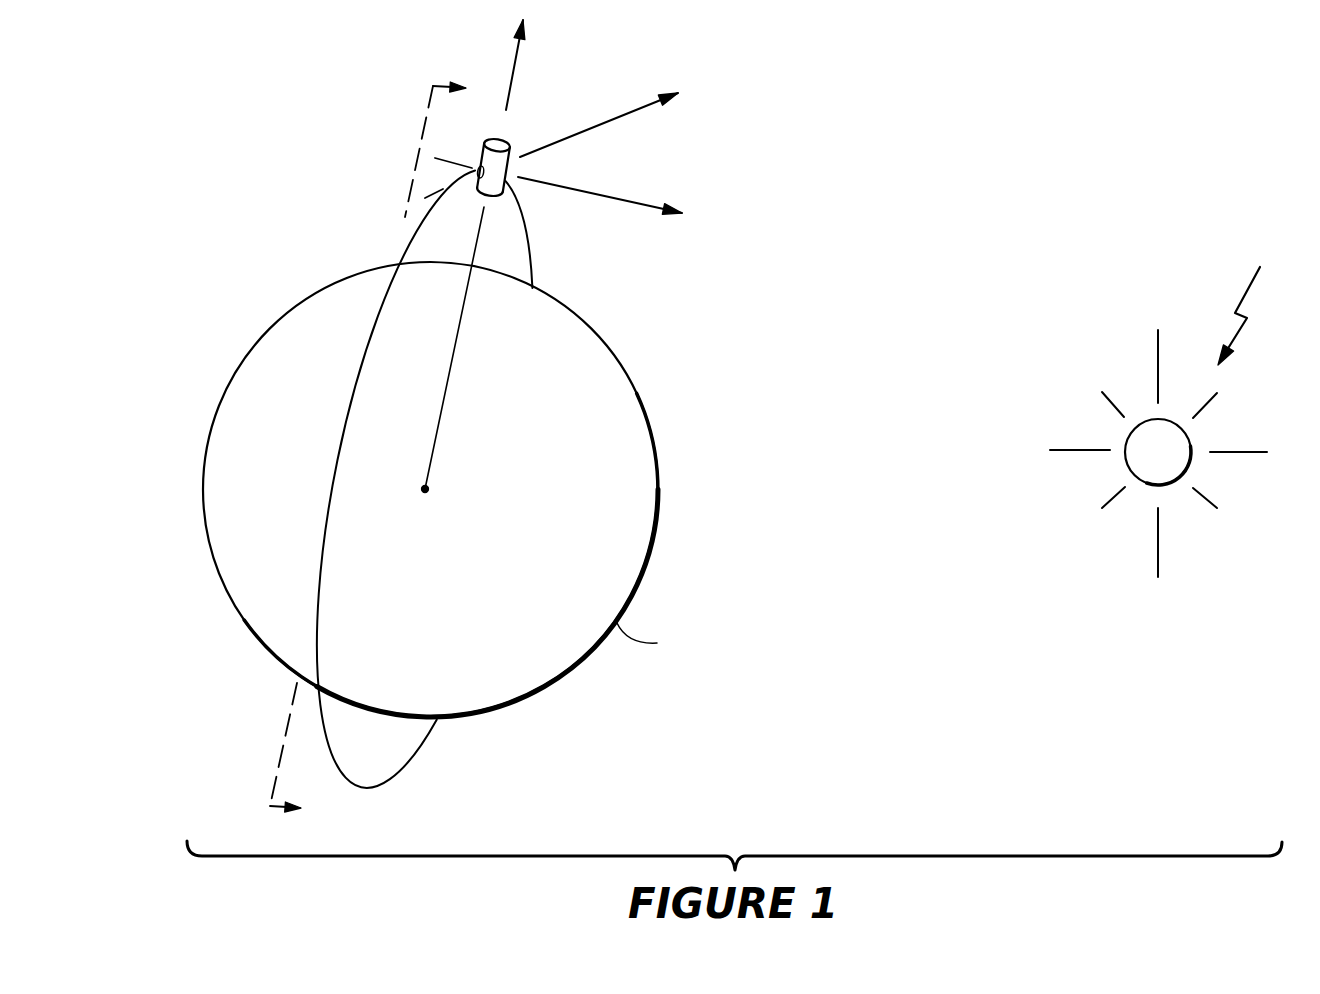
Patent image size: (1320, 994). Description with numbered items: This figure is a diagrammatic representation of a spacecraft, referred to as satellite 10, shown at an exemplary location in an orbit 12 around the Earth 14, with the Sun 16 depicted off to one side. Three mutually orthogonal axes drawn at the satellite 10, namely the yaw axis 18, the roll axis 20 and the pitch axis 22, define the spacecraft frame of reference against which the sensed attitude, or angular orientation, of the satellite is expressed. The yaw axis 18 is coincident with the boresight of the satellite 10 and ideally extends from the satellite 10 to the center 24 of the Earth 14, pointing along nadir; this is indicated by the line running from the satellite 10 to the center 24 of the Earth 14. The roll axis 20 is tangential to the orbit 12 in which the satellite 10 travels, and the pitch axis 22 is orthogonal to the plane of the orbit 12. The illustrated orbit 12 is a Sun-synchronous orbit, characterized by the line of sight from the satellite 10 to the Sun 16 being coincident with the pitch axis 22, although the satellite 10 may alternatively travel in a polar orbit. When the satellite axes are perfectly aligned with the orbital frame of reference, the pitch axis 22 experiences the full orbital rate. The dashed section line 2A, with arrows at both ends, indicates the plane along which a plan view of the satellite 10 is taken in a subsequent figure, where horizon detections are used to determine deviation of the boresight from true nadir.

The satellite 10 is at (509, 139).
The orbit 12 is at (532, 257).
The Earth 14 is at (640, 398).
The Sun 16 is at (1192, 441).
The yaw axis 18 is at (516, 60).
The roll axis 20 is at (620, 117).
The pitch axis 22 is at (618, 200).
The center of the Earth 24 is at (428, 488).
The line 2A— 2A is at (384, 453).